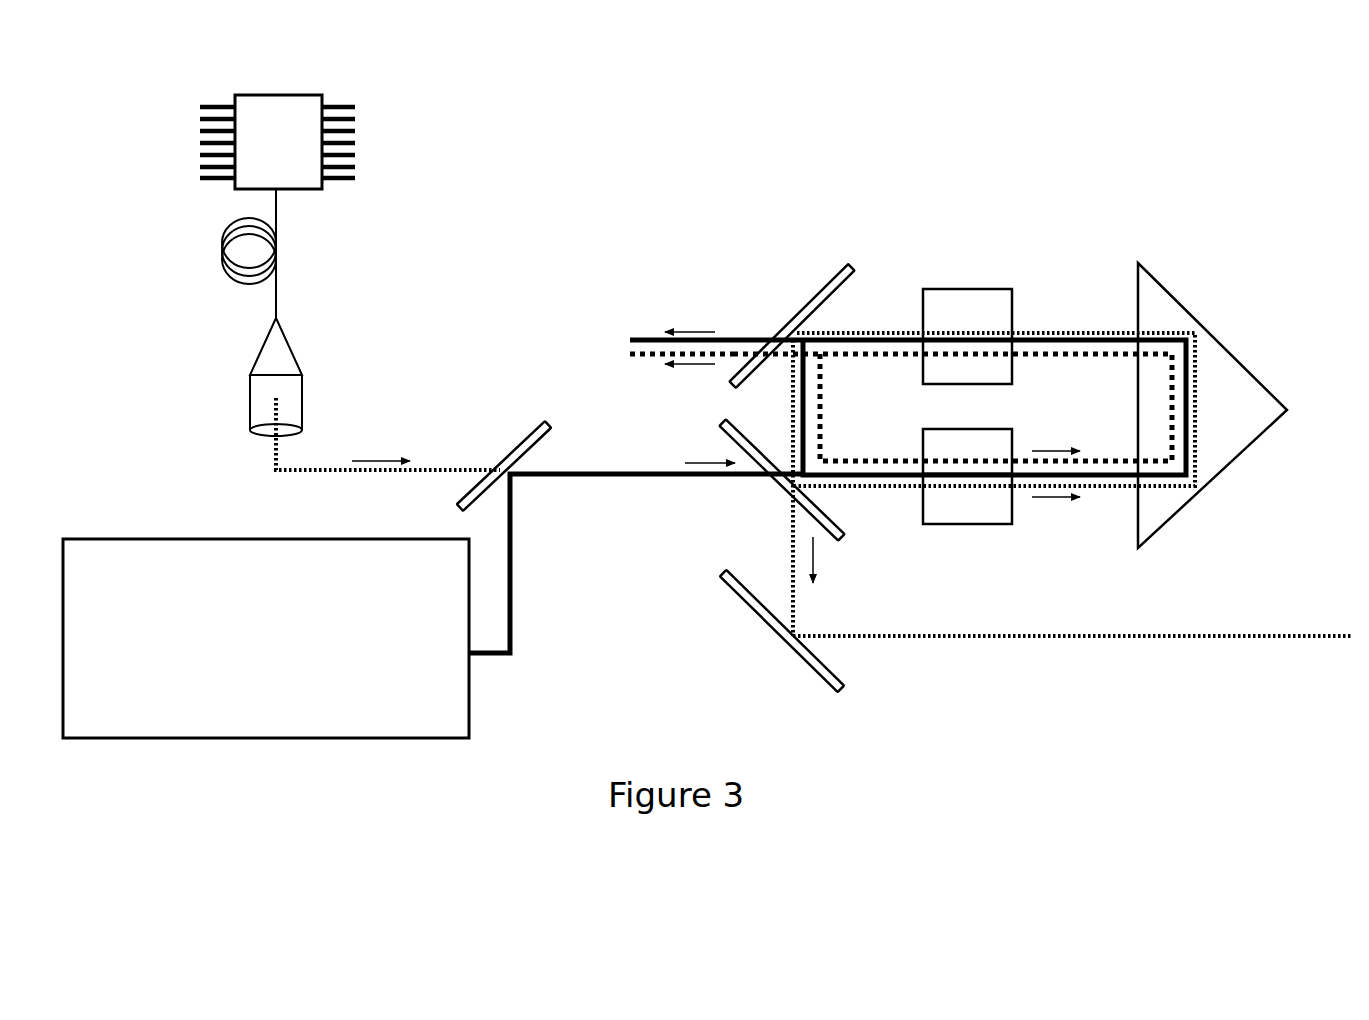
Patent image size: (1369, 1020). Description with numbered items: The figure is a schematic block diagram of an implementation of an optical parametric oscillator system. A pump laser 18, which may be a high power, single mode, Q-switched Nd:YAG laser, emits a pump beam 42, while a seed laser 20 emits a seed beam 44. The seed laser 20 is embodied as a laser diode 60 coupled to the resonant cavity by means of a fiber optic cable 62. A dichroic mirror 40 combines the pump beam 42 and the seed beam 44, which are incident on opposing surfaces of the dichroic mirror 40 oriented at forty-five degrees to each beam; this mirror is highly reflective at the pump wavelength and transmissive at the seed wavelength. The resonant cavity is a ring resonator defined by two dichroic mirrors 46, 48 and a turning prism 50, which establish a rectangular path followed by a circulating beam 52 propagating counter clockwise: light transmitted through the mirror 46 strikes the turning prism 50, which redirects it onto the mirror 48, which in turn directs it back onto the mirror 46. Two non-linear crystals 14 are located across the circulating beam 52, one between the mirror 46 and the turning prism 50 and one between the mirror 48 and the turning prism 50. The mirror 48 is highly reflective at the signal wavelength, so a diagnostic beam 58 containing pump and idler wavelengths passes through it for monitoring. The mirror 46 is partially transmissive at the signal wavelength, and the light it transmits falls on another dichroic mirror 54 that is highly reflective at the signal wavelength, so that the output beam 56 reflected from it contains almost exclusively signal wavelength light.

The non-linear crystals 14 is at (1000, 445).
The pump laser 18 is at (254, 696).
The seed laser 20 is at (391, 90).
The dichroic mirror 40 is at (522, 440).
The pump beam 42 is at (513, 588).
The seed beam 44 is at (318, 470).
The dichroic mirror 46 is at (782, 490).
The dichroic mirror 48 is at (826, 290).
The turning prism 50 is at (1245, 392).
The circulating beam 52 is at (1112, 478).
The dichroic mirror 54 is at (783, 635).
The output beam 56 is at (1143, 636).
The diagnostic beam 58 is at (660, 354).
The laser diode 60 is at (317, 190).
The fiber optic cable 62 is at (258, 244).